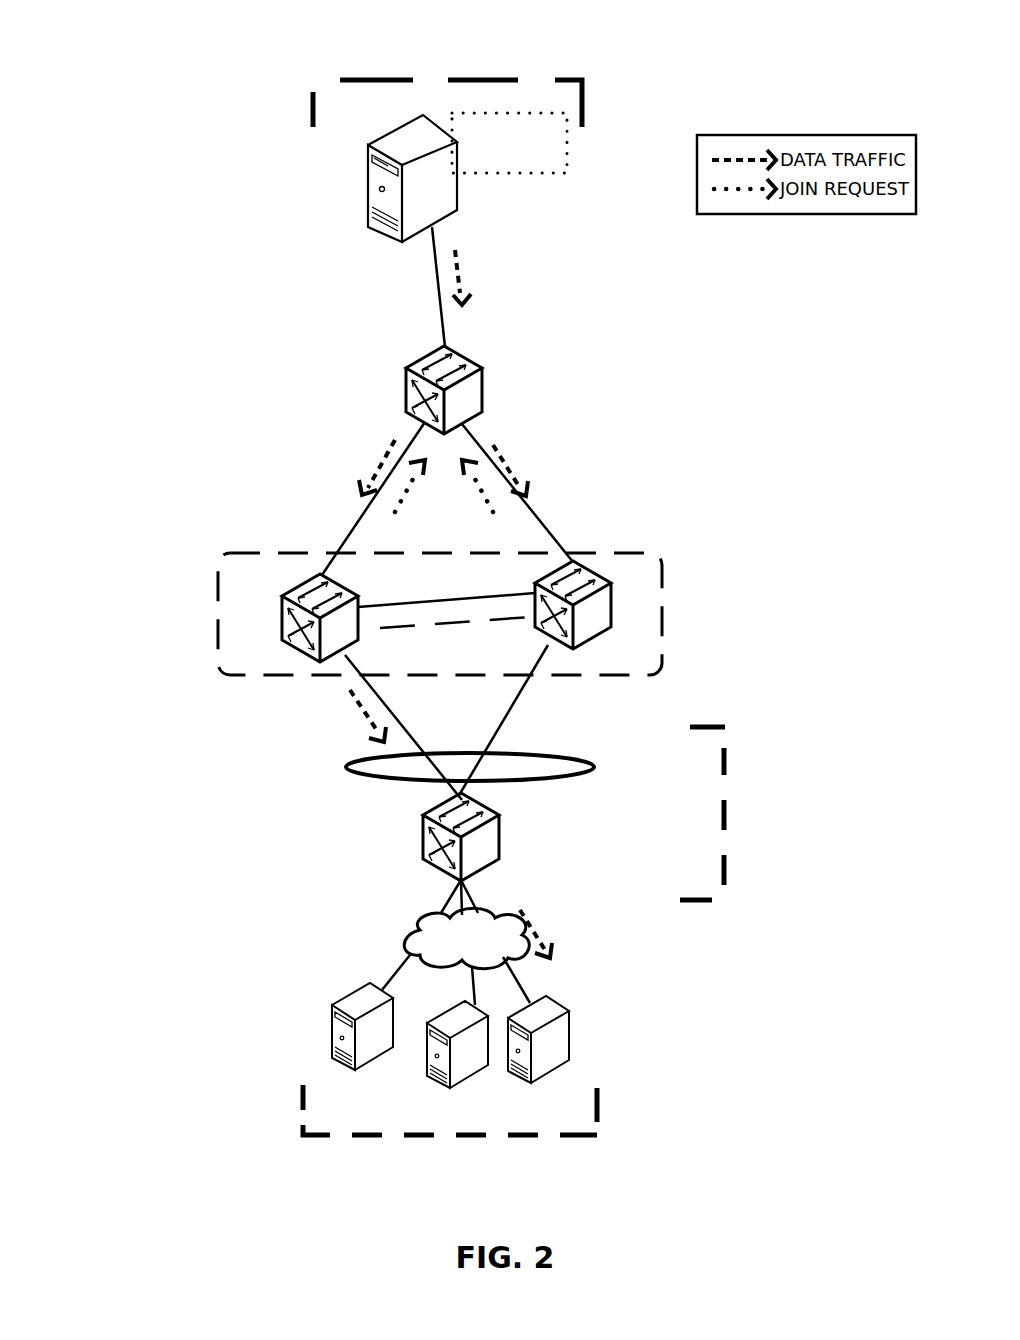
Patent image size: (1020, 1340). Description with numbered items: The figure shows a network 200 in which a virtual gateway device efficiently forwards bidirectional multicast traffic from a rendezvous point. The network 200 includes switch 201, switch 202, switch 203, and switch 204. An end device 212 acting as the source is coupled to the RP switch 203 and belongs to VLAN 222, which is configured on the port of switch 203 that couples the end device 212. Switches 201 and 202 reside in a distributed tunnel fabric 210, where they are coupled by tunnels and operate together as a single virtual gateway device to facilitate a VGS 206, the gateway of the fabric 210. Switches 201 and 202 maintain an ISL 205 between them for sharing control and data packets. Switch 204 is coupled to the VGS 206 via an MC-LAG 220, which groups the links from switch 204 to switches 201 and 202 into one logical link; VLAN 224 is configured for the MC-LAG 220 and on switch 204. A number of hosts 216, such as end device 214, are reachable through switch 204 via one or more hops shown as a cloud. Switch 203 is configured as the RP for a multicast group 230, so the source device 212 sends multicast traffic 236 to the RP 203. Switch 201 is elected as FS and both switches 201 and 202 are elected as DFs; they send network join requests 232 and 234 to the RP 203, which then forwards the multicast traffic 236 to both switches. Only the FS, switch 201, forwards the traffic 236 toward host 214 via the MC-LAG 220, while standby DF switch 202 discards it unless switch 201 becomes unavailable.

The network 200 is at (160, 97).
The VLAN 222 is at (705, 727).
The multicast group 230 is at (509, 143).
The end device 212 is at (366, 165).
The multicast traffic 236 is at (462, 275).
The switch 203 is at (501, 400).
The network join request 232 is at (403, 500).
The network join request 234 is at (478, 487).
The switch 201 is at (258, 628).
The switch 202 is at (628, 630).
The ISL 205 is at (515, 612).
The distributed tunnel fabric 210 is at (802, 452).
The VGS 206 is at (615, 680).
The MC-LAG 220 is at (346, 768).
The switch 204 is at (500, 845).
The end device 214 is at (570, 1036).
The hosts 216 is at (322, 958).
The VLAN 224 is at (301, 1097).